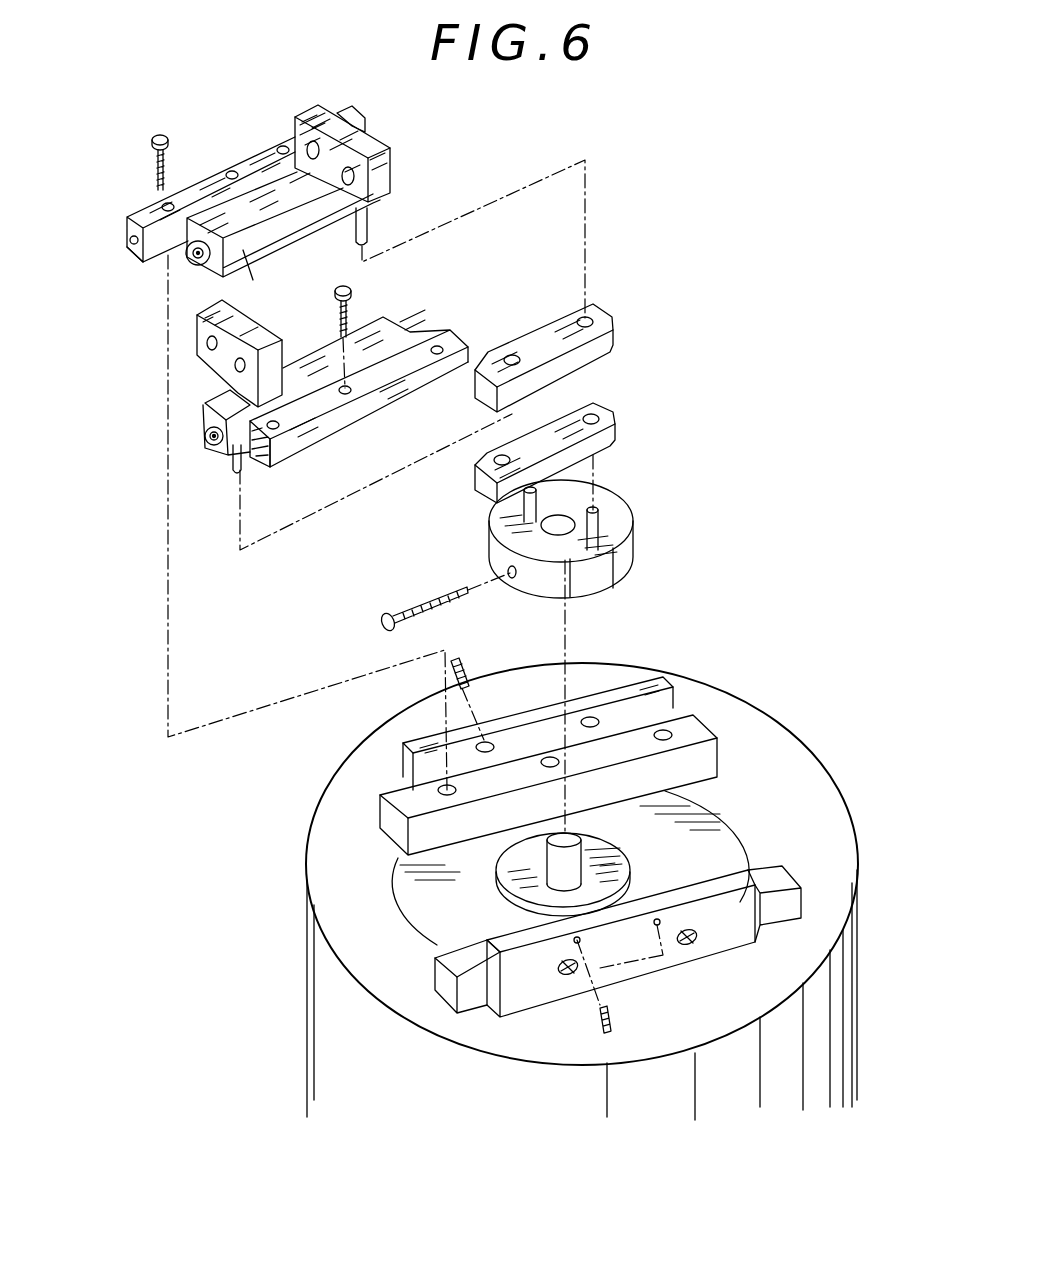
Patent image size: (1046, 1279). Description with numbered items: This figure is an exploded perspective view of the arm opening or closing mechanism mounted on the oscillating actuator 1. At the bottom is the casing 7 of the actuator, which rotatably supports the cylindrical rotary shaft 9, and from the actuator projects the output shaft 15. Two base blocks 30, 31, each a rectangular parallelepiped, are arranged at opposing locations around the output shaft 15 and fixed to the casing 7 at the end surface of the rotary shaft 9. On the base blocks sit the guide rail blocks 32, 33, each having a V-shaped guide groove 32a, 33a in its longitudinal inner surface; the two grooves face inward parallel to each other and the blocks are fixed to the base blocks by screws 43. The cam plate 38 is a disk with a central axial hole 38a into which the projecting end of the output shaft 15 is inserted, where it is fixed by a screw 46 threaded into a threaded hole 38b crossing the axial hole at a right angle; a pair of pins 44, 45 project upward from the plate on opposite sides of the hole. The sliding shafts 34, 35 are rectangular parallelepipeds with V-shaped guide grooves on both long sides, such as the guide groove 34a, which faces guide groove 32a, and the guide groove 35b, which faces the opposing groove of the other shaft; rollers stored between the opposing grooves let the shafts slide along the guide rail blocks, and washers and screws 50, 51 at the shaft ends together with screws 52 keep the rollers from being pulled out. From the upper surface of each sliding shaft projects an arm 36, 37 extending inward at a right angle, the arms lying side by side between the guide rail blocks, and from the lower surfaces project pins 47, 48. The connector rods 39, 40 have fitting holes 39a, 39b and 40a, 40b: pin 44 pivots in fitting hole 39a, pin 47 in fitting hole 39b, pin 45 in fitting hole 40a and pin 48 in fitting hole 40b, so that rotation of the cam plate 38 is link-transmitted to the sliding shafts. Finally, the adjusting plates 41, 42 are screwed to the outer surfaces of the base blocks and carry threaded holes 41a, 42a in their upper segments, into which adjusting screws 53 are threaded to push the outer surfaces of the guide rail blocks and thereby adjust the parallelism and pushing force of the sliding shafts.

The oscillating actuator 1 is at (860, 978).
The casing 7 is at (328, 838).
The rotary shaft 9 is at (617, 857).
The output shaft 15 is at (497, 872).
The base block 30 is at (437, 990).
The base block 31 is at (690, 717).
The guide rail block 32 is at (378, 378).
The guide groove 32a is at (262, 452).
The guide rail block 33 is at (181, 218).
The guide groove 33a is at (143, 262).
The sliding shaft 34 is at (400, 315).
The guide groove 34a is at (225, 455).
The sliding shaft 35 is at (283, 242).
The guide groove 35b is at (247, 252).
The arm 36 is at (200, 330).
The arm 37 is at (308, 106).
The cam plate 38 is at (542, 557).
The axial hole 38a is at (548, 528).
The threaded hole 38b is at (513, 580).
The connector rod 39 is at (547, 460).
The fitting hole 39a is at (598, 415).
The fitting hole 39b is at (500, 465).
The connector rod 40 is at (582, 329).
The fitting hole 40a is at (515, 355).
The fitting hole 40b is at (590, 318).
The adjusting plate 41 is at (644, 961).
The threaded hole 41a is at (660, 922).
The adjusting plate 42 is at (538, 699).
The threaded hole 42a is at (592, 716).
The screw 43 is at (165, 137).
The pin 44 is at (600, 535).
The pin 45 is at (528, 518).
The screw 46 is at (380, 622).
The pin 47 is at (237, 478).
The pin 48 is at (370, 230).
The washer 50 is at (200, 265).
The screw 51 is at (195, 258).
The screw 52 is at (128, 242).
The adjusting screw 53 is at (460, 657).